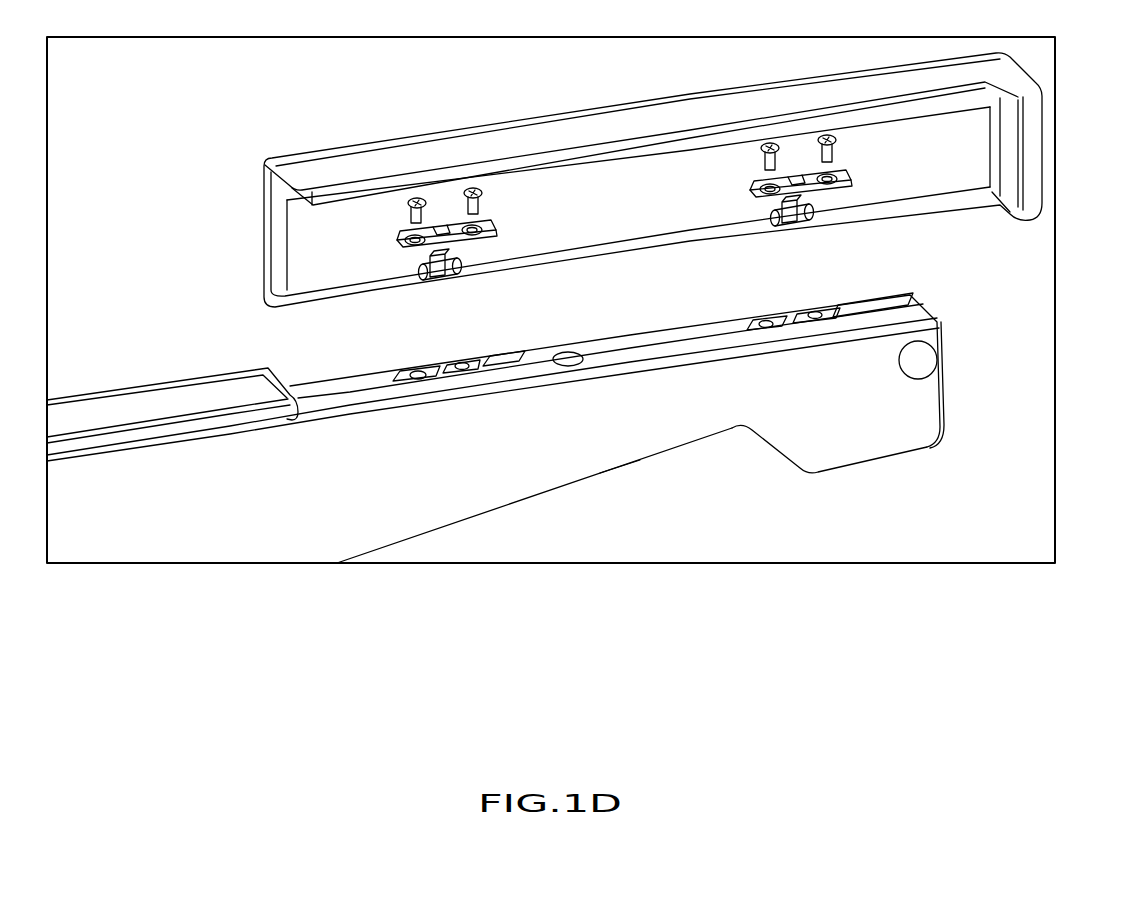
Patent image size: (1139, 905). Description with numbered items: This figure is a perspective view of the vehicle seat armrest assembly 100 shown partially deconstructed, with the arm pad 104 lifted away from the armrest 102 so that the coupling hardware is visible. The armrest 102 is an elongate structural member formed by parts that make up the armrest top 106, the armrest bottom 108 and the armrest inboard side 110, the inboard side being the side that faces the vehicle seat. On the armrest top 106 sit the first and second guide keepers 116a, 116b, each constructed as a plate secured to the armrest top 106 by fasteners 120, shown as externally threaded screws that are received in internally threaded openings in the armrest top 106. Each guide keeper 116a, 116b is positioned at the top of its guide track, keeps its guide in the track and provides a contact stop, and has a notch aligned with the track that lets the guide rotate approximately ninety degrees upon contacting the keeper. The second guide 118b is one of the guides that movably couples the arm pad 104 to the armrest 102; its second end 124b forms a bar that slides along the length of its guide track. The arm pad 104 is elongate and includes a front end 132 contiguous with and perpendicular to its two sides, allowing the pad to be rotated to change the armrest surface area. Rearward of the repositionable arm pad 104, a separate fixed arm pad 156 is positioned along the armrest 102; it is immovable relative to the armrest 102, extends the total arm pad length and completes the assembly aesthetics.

The armrest assembly 100 is at (213, 92).
The armrest 102 is at (537, 503).
The arm pad 104 is at (581, 123).
The armrest top 106 is at (907, 317).
The armrest bottom 108 is at (782, 466).
The armrest inboard side 110 is at (625, 462).
The first guide keeper 116a is at (752, 178).
The second guide keeper 116b is at (403, 229).
The second guide 118b is at (434, 282).
The fastener 120 is at (473, 188).
The second end of second guide 124b is at (442, 276).
The front end of arm pad 132 is at (1036, 156).
The fixed arm pad 156 is at (158, 392).